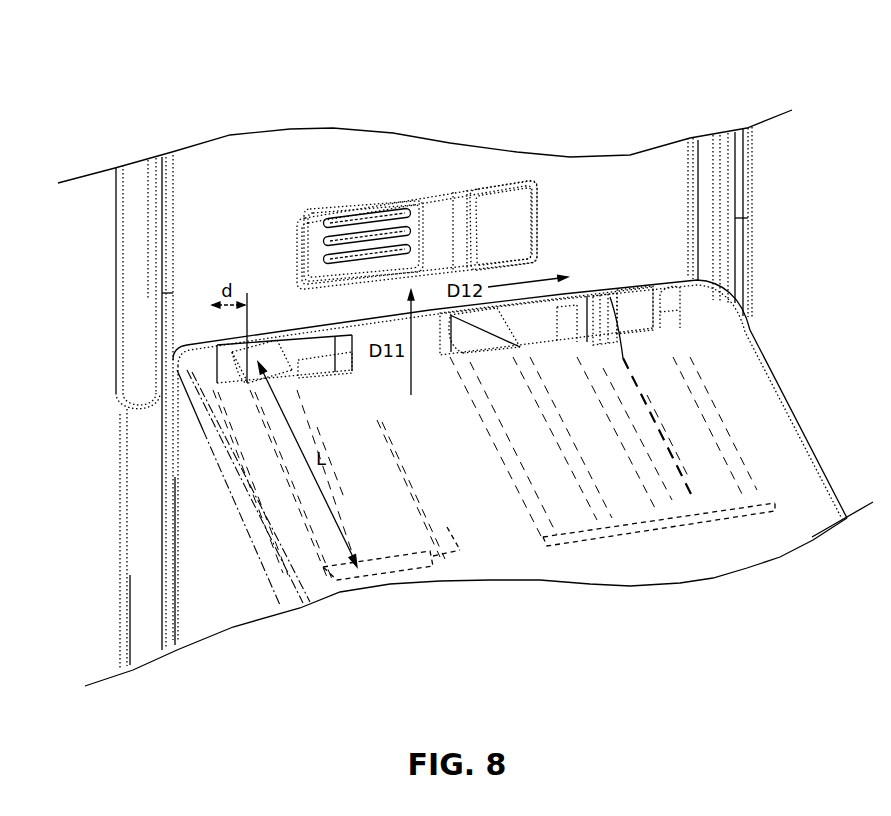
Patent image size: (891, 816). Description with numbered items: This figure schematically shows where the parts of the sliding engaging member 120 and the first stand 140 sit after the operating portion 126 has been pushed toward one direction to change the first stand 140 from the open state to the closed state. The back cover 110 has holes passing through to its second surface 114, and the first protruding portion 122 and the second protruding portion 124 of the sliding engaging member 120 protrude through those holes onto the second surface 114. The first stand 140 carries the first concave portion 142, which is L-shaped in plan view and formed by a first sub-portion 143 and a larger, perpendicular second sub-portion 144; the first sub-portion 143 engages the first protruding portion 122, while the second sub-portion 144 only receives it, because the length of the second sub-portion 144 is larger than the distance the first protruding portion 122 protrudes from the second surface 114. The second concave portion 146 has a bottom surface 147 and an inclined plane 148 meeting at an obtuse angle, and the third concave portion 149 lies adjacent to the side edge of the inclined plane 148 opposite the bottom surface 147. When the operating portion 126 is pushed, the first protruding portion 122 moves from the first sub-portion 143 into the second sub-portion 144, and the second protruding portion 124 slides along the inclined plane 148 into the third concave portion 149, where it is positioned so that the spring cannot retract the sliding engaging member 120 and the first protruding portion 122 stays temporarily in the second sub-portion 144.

The back cover 110 is at (627, 180).
The second surface 114 is at (185, 228).
The sliding engaging member 120 is at (592, 45).
The first protruding portion 122 is at (265, 350).
The second protruding portion 124 is at (597, 295).
The operating portion 126 is at (368, 230).
The first stand 140 is at (527, 555).
The first concave portion 142 is at (530, 623).
The first sub-portion 143 is at (357, 365).
The second sub-portion 144 is at (338, 495).
The second concave portion 146 is at (828, 661).
The bottom surface 147 is at (758, 492).
The inclined plane 148 is at (725, 493).
The third concave portion 149 is at (697, 527).